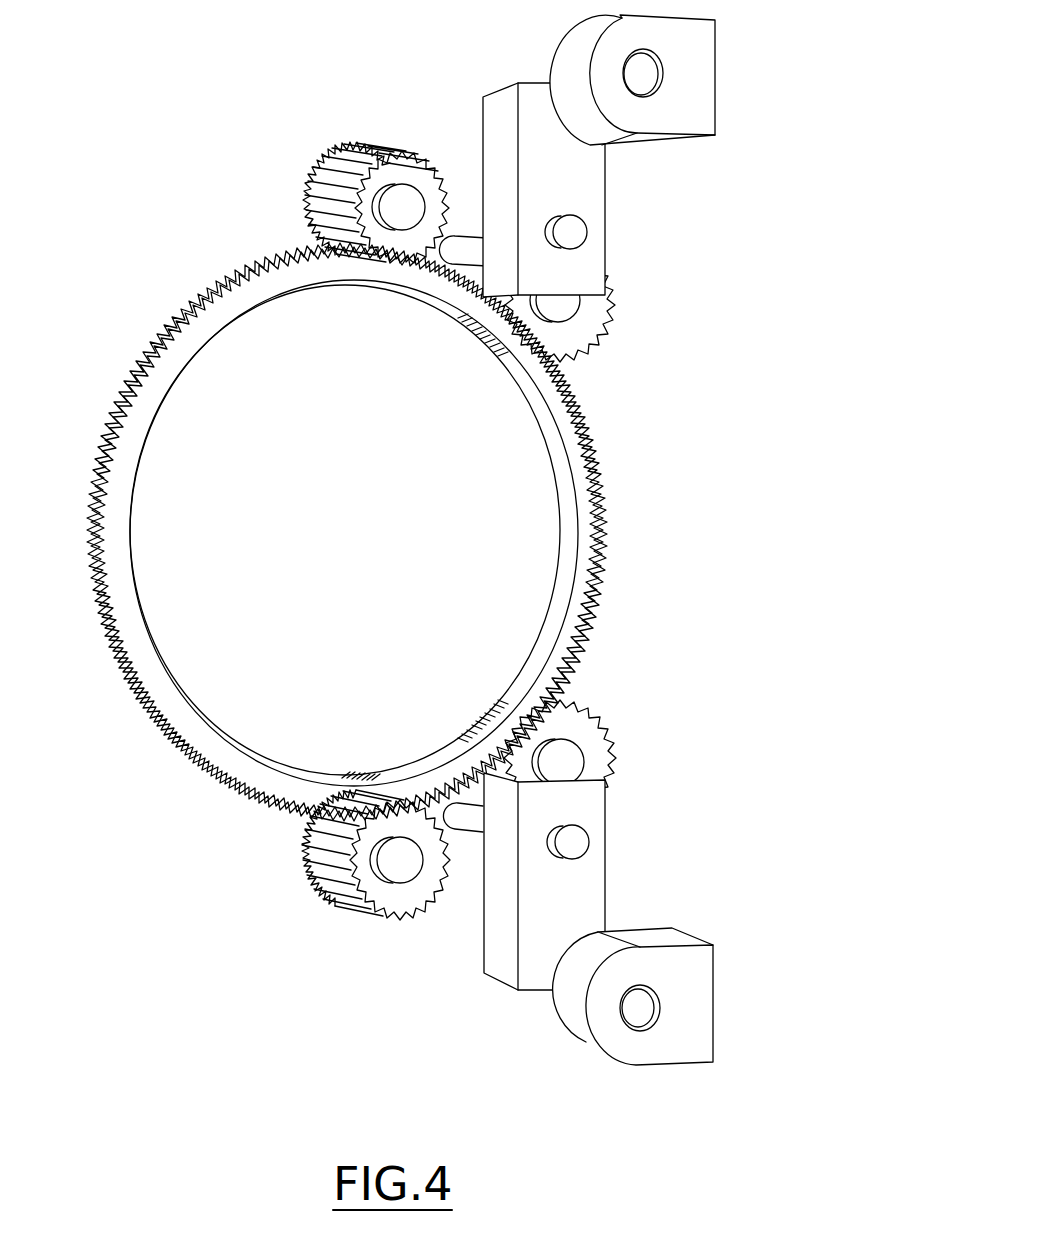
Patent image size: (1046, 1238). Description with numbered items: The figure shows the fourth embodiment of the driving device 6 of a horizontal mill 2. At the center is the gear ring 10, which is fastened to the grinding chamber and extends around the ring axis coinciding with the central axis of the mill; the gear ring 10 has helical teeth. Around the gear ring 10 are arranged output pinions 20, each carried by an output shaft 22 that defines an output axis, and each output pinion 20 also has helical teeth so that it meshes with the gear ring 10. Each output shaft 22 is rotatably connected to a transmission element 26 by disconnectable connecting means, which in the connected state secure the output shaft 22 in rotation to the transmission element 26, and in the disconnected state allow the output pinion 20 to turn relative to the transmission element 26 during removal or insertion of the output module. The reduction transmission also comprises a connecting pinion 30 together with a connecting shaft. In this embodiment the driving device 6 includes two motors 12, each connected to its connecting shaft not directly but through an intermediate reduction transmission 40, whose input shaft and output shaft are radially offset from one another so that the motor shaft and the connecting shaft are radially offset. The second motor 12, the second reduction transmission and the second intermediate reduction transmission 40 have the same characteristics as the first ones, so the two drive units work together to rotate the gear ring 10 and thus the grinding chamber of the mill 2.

The horizontal mill 2 is at (330, 868).
The driving device 6 is at (759, 1078).
The gear ring 10 is at (213, 323).
The motor 12 is at (655, 147).
The output pinion 20 is at (390, 173).
The output shaft 22 is at (398, 192).
The transmission element 26 is at (565, 327).
The connecting pinion 30 is at (452, 232).
The intermediate reduction transmission 40 is at (593, 268).